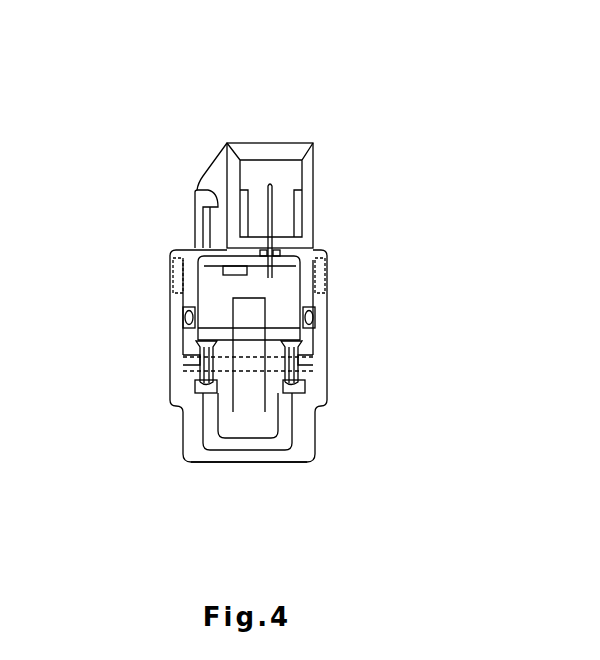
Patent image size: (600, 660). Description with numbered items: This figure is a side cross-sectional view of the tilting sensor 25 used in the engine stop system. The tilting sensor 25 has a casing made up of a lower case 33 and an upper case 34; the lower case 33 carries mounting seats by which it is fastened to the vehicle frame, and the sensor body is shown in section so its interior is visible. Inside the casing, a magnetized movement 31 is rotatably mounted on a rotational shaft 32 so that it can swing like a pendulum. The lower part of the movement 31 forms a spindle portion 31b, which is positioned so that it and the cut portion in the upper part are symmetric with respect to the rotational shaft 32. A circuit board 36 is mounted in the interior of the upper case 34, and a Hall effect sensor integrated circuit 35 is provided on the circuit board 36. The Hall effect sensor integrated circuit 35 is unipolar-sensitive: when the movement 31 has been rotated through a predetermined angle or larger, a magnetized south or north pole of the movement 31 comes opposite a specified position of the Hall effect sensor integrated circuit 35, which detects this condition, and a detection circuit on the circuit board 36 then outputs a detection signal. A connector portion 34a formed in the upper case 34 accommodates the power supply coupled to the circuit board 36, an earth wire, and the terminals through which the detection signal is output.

The tilting sensor 25 is at (349, 126).
The magnetized movement 31 is at (257, 315).
The spindle portion 31b is at (270, 427).
The rotational shaft 32 is at (187, 363).
The lower case 33 is at (248, 462).
The upper case 34 is at (327, 263).
The connector portion 34a is at (313, 182).
The Hall effect sensor integrated circuit 35 is at (233, 279).
The circuit board 36 is at (208, 263).